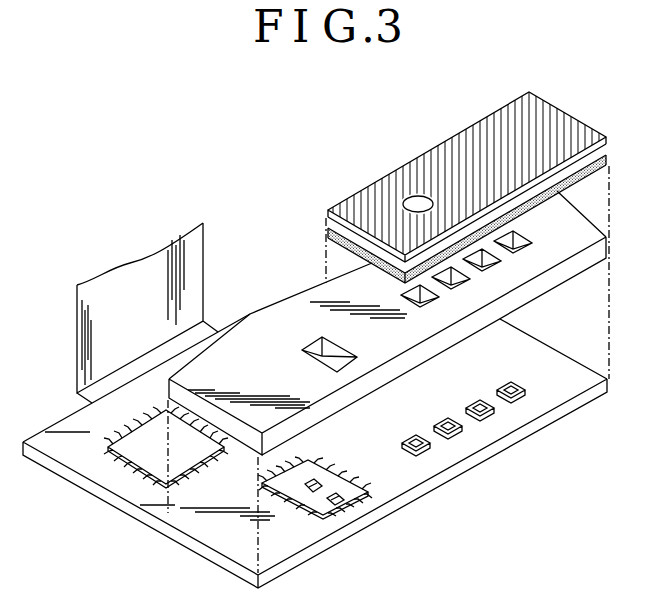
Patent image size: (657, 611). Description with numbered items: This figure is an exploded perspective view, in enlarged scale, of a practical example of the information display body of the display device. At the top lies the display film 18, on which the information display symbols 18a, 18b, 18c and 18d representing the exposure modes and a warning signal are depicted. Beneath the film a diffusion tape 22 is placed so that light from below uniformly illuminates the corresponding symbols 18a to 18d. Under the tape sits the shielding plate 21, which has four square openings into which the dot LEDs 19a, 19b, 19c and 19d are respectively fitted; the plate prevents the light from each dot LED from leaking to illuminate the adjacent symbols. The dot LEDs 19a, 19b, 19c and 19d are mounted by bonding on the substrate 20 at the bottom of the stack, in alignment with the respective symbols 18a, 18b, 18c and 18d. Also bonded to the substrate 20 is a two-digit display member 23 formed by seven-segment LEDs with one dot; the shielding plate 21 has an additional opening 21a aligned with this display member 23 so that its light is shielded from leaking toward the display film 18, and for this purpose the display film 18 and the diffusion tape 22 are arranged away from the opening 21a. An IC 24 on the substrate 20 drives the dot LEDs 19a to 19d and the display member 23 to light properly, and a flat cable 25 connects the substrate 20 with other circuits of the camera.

The display film 18 is at (566, 120).
The information display symbol 18a is at (517, 147).
The information display symbol 18b is at (487, 163).
The information display symbol 18c is at (450, 185).
The information display symbol 18d is at (415, 197).
The diffusion tape 22 is at (598, 165).
The shielding plate 21 is at (576, 266).
The additional opening 21a is at (316, 345).
The dot LED 19a is at (510, 386).
The dot LED 19b is at (480, 404).
The dot LED 19c is at (448, 422).
The dot LED 19d is at (414, 439).
The substrate 20 is at (566, 395).
The 2-digit display member 23 is at (332, 472).
The IC 24 is at (110, 447).
The flat cable 25 is at (204, 270).